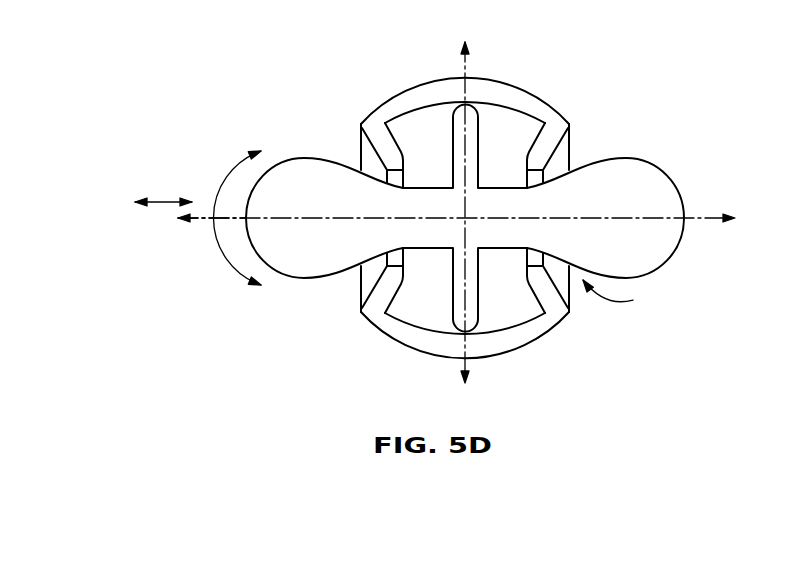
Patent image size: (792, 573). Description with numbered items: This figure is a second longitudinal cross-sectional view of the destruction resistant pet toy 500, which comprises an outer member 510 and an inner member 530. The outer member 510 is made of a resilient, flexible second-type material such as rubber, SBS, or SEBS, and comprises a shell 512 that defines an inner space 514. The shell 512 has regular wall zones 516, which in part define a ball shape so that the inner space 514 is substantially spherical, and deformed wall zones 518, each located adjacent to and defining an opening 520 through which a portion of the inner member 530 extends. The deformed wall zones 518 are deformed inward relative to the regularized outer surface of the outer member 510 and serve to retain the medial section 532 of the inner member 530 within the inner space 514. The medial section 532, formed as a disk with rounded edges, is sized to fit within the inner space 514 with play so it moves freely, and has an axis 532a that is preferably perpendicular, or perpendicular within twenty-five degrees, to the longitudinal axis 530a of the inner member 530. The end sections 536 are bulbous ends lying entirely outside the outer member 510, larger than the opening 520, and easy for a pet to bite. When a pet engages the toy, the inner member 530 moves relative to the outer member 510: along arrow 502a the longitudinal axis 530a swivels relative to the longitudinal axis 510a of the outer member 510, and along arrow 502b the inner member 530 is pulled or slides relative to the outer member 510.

The destruction resistant pet toy 500 is at (640, 84).
The arrow 502a is at (218, 214).
The arrow 502b is at (133, 200).
The outer member 510 is at (502, 83).
The longitudinal axis 510a is at (465, 233).
The shell 512 is at (413, 98).
The inner space 514 is at (427, 155).
The regular wall zones 516 is at (440, 80).
The deformed wall zones 518 is at (541, 155).
The opening 520 is at (630, 297).
The inner member 530 is at (307, 175).
The longitudinal axis 530a is at (461, 247).
The medial section 532 is at (388, 328).
The axis 532a is at (435, 214).
The end sections 536 is at (638, 183).